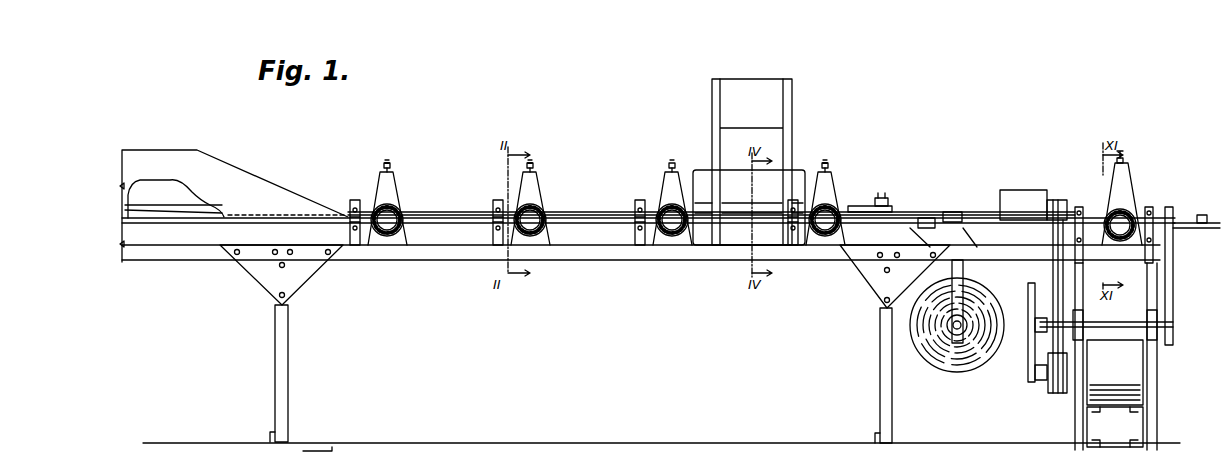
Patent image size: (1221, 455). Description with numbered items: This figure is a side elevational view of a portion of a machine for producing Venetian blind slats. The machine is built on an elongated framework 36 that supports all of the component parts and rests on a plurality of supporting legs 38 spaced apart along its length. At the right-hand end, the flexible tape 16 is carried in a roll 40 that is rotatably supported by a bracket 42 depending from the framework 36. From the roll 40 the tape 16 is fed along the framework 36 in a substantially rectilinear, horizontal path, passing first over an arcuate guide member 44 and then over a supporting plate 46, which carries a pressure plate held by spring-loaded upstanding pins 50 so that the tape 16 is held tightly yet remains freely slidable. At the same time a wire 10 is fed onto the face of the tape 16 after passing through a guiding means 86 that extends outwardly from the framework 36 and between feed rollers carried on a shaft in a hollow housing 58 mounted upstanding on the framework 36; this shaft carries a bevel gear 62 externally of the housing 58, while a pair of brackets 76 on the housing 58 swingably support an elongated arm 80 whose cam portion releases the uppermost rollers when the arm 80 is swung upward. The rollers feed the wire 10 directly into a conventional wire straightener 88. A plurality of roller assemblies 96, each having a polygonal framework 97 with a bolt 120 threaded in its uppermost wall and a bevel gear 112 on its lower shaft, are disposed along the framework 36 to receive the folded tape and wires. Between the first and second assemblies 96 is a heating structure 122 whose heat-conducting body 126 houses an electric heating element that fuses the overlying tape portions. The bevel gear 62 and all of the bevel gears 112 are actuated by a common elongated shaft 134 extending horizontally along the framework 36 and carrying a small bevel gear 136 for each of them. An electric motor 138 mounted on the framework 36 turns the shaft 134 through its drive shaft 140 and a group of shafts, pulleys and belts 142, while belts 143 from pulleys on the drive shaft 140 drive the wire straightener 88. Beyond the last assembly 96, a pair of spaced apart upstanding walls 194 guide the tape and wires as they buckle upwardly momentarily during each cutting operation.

The wire 10 is at (1196, 234).
The flexible tape 16 is at (965, 280).
The framework 36 is at (641, 264).
The supporting legs 38 is at (285, 354).
The roll 40 is at (951, 368).
The bracket 42 is at (928, 268).
The arcuate guide member 44 is at (928, 235).
The supporting plate 46 is at (868, 201).
The upstanding pins 50 is at (883, 197).
The hollow housing 58 is at (1135, 198).
The bevel gear 62 is at (1100, 212).
The brackets 76 is at (1124, 163).
The elongated arm 80 is at (1124, 157).
The guiding means 86 is at (1205, 214).
The wire straightener 88 is at (1026, 194).
The roller assemblies 96 is at (398, 184).
The polygonal framework 97 is at (390, 174).
The bevel gear 112 is at (402, 230).
The bolt 120 is at (532, 170).
The heating structure 122 is at (749, 162).
The body 126 is at (728, 206).
The elongated shaft 134 is at (590, 214).
The small bevel gear 136 is at (356, 203).
The electric motor 138 is at (1125, 373).
The drive shaft 140 is at (1047, 385).
The shafts, pulleys and belts 142 is at (1186, 276).
The belts 143 is at (1030, 330).
The upstanding walls 194 is at (228, 178).